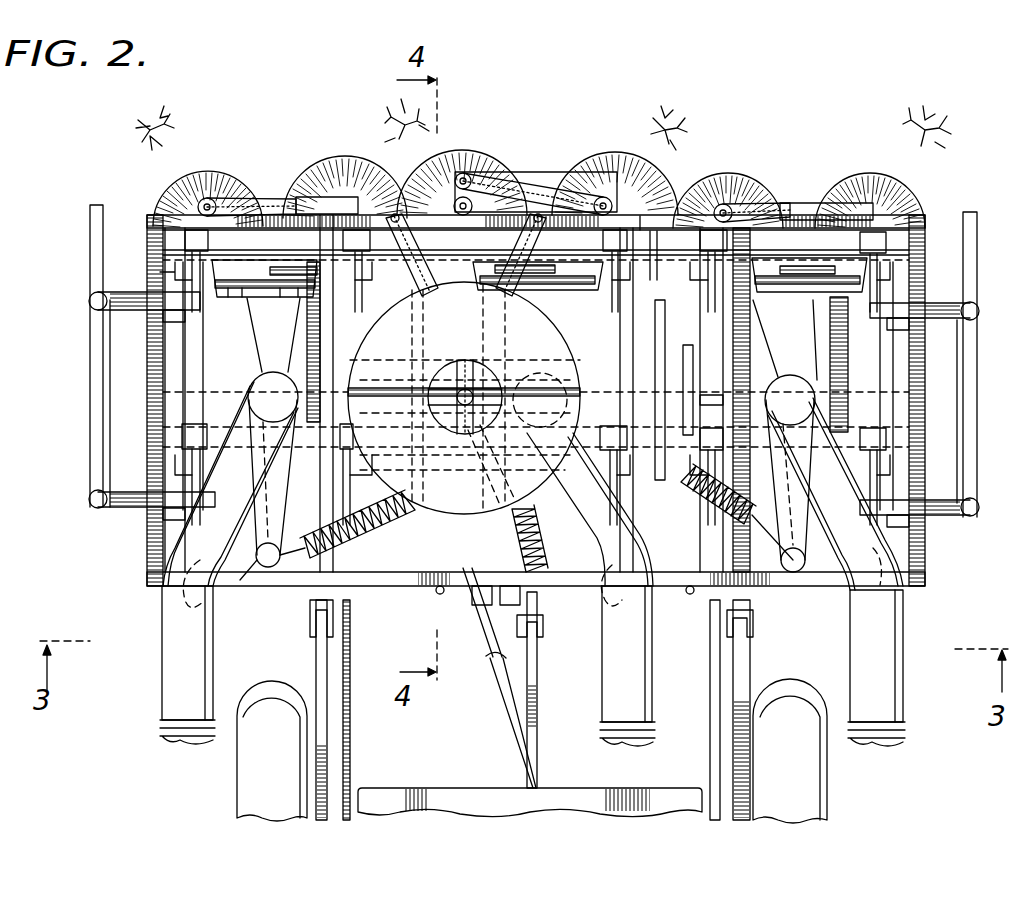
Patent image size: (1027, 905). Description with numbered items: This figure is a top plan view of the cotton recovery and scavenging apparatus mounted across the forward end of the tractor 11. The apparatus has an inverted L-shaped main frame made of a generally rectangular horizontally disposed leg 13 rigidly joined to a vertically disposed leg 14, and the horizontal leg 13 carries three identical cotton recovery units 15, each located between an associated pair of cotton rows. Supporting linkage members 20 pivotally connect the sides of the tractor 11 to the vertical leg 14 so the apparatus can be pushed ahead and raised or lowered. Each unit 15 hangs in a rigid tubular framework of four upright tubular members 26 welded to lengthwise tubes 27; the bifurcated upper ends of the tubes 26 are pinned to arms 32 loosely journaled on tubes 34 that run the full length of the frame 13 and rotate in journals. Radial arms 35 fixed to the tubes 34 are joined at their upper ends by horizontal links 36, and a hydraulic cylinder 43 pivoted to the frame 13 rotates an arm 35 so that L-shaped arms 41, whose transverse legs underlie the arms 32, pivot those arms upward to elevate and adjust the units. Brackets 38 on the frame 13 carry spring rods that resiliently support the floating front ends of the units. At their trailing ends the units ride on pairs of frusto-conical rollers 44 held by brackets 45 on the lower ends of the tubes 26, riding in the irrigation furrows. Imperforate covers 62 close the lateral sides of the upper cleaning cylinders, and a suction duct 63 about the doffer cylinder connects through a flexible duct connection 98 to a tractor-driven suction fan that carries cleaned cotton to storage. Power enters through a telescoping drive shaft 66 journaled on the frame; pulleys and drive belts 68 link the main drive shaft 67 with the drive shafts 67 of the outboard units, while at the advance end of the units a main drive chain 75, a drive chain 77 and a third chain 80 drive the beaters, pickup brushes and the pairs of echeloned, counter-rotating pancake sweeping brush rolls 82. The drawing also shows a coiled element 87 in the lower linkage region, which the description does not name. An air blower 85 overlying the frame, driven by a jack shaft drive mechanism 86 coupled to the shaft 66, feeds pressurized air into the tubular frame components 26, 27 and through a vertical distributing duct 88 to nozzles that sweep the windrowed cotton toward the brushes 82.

The tractor 11 is at (634, 778).
The horizontally disposed leg 13 is at (140, 559).
The vertically disposed leg 14 is at (310, 626).
The cotton recovery unit 15 is at (255, 336).
The supporting linkage member 20 is at (318, 665).
The upright tubular member 26 is at (170, 318).
The tube 27 is at (97, 385).
The arm 32 is at (192, 284).
The tube 34 is at (285, 235).
The arm 35 is at (646, 236).
The horizontal link 36 is at (703, 405).
The bracket 38 is at (162, 300).
The L-shaped arm 41 is at (175, 264).
The hydraulic cylinder 43 is at (705, 368).
The frusto-conical roller 44 is at (305, 608).
The bracket 45 is at (178, 588).
The imperforate cover 62 is at (162, 662).
The duct 63 is at (275, 420).
The telescoping drive shaft 66 is at (488, 660).
The drive shaft 67 is at (262, 505).
The drive belt 68 is at (440, 594).
The main drive chain 75 is at (262, 298).
The drive chain 77 is at (285, 266).
The third chain 80 is at (256, 198).
The sweeping brush roll 82 is at (225, 178).
The air blower 85 is at (464, 398).
The jack shaft drive mechanism 86 is at (480, 430).
The spring 87 is at (358, 538).
The vertical distributing duct 88 is at (258, 570).
The flexible duct connection 98 is at (162, 735).